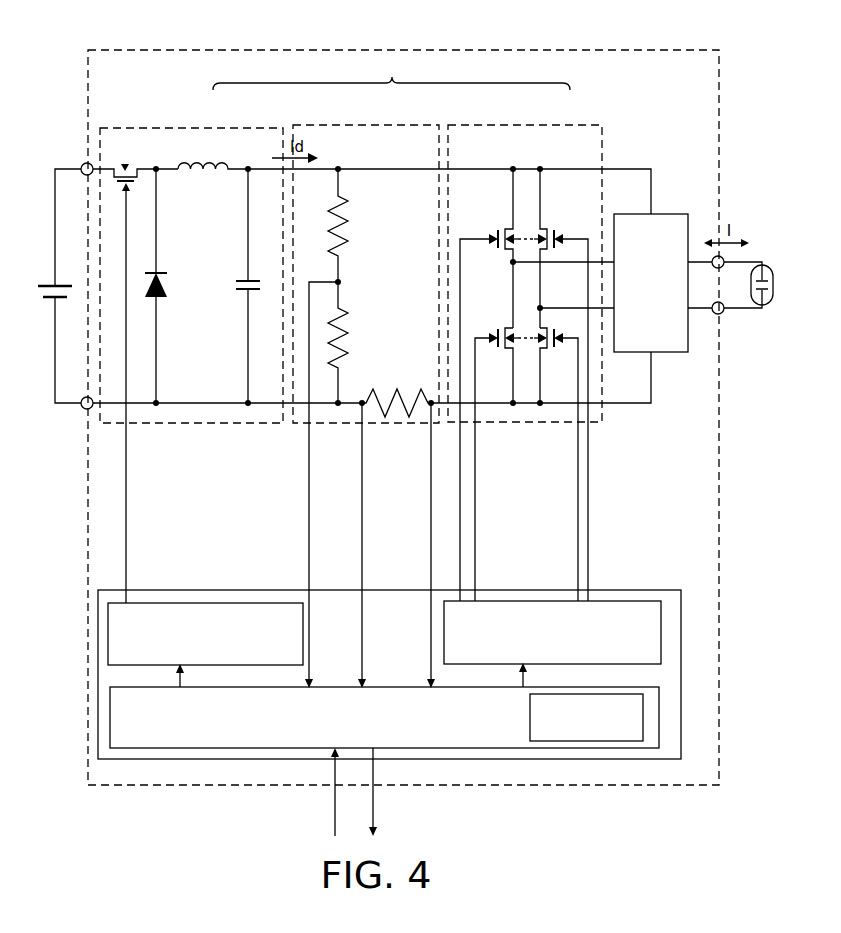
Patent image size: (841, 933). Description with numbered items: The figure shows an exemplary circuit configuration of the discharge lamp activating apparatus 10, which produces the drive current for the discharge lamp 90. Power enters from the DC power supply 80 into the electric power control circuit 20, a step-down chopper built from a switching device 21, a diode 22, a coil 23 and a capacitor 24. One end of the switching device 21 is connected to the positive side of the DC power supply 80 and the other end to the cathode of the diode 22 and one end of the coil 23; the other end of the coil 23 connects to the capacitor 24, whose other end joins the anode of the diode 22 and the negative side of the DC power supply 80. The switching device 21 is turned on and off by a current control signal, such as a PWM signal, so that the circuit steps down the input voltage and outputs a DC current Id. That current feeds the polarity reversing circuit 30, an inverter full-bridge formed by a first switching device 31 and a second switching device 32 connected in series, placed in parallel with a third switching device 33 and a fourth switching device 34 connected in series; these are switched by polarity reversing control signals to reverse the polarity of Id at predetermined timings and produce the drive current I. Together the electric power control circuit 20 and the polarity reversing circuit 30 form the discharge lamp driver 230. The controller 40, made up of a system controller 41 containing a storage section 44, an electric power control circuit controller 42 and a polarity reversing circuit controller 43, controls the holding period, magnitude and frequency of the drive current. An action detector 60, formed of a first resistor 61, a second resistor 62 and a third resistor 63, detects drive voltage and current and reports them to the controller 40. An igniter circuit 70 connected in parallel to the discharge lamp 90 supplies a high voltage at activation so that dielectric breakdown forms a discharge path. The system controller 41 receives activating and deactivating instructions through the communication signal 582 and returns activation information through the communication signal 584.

The discharge lamp activating apparatus 10 is at (720, 50).
The discharge lamp driver 230 is at (391, 72).
The electric power control circuit 20 is at (226, 127).
The switching device 21 is at (127, 368).
The diode 22 is at (171, 286).
The coil 23 is at (215, 151).
The capacitor 24 is at (257, 286).
The polarity reversing circuit 30 is at (534, 124).
The first switching device 31 is at (489, 385).
The second switching device 32 is at (496, 454).
The third switching device 33 is at (561, 385).
The fourth switching device 34 is at (558, 454).
The controller 40 is at (489, 590).
The system controller 41 is at (659, 691).
The electric power control circuit controller 42 is at (222, 603).
The polarity reversing circuit controller 43 is at (608, 601).
The storage section 44 is at (644, 723).
The action detector 60 is at (380, 424).
The first resistor 61 is at (357, 225).
The second resistor 62 is at (357, 342).
The third resistor 63 is at (396, 389).
The igniter circuit 70 is at (677, 214).
The DC power supply 80 is at (50, 286).
The discharge lamp 90 is at (768, 266).
The communication signal 582 is at (335, 808).
The communication signal 584 is at (373, 806).